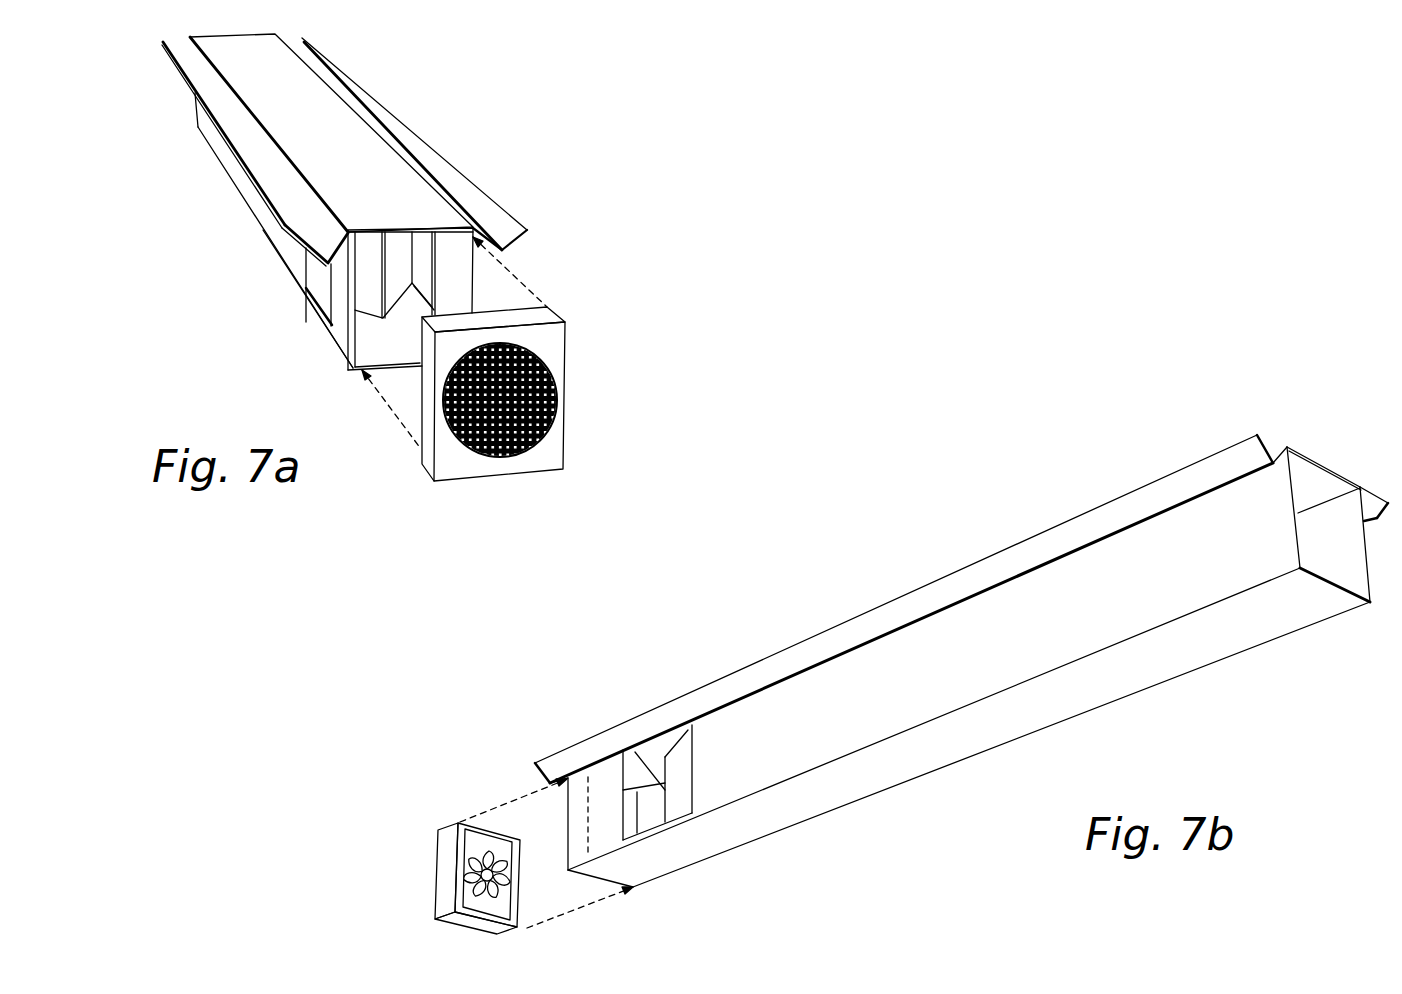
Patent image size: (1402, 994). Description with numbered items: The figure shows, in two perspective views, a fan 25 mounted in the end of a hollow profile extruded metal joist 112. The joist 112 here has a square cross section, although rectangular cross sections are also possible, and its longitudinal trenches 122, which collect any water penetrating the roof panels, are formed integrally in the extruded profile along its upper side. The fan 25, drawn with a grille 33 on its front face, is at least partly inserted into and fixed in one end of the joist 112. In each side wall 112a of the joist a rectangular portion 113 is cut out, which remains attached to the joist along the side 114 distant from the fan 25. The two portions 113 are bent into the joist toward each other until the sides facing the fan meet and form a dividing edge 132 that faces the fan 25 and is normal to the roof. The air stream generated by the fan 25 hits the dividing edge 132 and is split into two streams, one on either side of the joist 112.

In FIG. 7A, the extruded metal joist 112 is at (255, 200).
In FIG. 7B, the extruded metal joist 112 is at (948, 676).
In FIG. 7A, the side wall 112a is at (297, 252).
In FIG. 7B, the side wall 112a is at (770, 770).
In FIG. 7A, the trenches 122 is at (485, 212).
In FIG. 7B, the trenches 122 is at (1015, 557).
In FIG. 7A, the rectangular portion 113 is at (307, 260).
In FIG. 7B, the rectangular portion 113 is at (665, 757).
In FIG. 7A, the side 114 is at (322, 280).
In FIG. 7B, the side 114 is at (692, 760).
In FIG. 7A, the dividing edge 132 is at (380, 278).
In FIG. 7B, the dividing edge 132 is at (655, 787).
In FIG. 7A, the fan 25 is at (540, 460).
In FIG. 7B, the fan 25 is at (448, 832).
In FIG. 7A, the fan grille mesh 33 is at (535, 400).